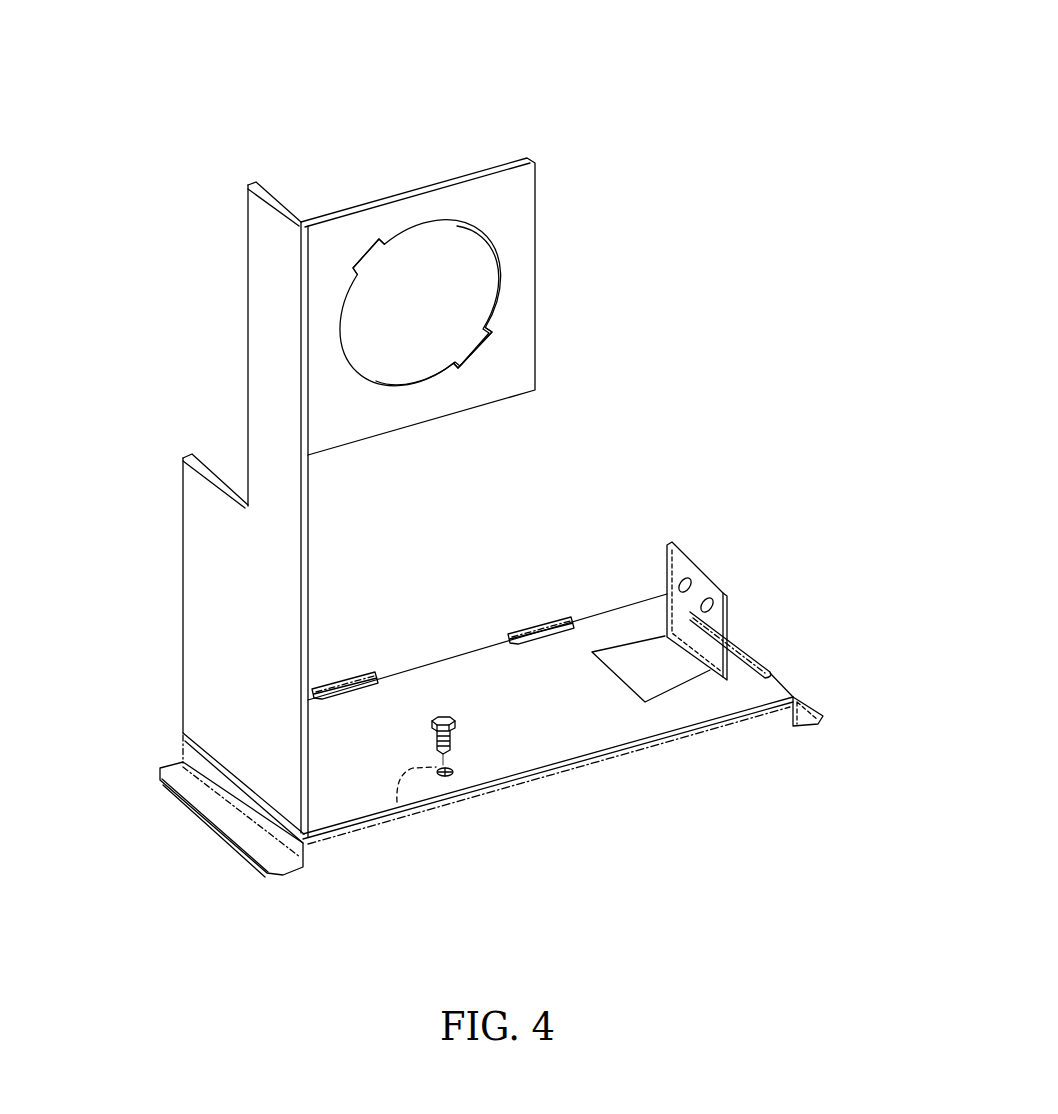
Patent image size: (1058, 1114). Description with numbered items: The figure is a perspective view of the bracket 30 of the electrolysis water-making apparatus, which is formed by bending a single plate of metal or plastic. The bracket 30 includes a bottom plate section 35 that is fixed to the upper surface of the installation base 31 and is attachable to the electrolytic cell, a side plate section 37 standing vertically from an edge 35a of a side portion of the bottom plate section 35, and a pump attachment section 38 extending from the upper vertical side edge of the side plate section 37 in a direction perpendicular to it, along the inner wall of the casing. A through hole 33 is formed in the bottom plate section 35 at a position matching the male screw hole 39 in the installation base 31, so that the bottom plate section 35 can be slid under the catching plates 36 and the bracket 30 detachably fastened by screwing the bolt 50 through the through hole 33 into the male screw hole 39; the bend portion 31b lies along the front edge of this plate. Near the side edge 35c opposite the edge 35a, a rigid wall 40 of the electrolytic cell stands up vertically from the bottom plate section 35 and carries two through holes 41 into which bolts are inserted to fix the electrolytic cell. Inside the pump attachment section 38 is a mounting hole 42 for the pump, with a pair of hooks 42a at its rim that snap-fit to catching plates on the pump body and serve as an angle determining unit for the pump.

The bracket 30 is at (562, 144).
The installation base 31 is at (240, 826).
The bend portion 31b is at (590, 765).
The through hole 33 is at (455, 771).
The bottom plate section 35 is at (493, 688).
The edge of a side portion 35a is at (223, 778).
The side edge 35c is at (795, 690).
The catching plate 36 is at (348, 678).
The side plate section 37 is at (204, 556).
The pump attachment section 38 is at (510, 297).
The male screw hole 39 is at (403, 805).
The rigid wall of the electrolytic cell 40 is at (688, 568).
The through hole 41 is at (683, 584).
The mounting hole 42 is at (422, 366).
The hook 42a is at (362, 268).
The bolt 50 is at (444, 716).